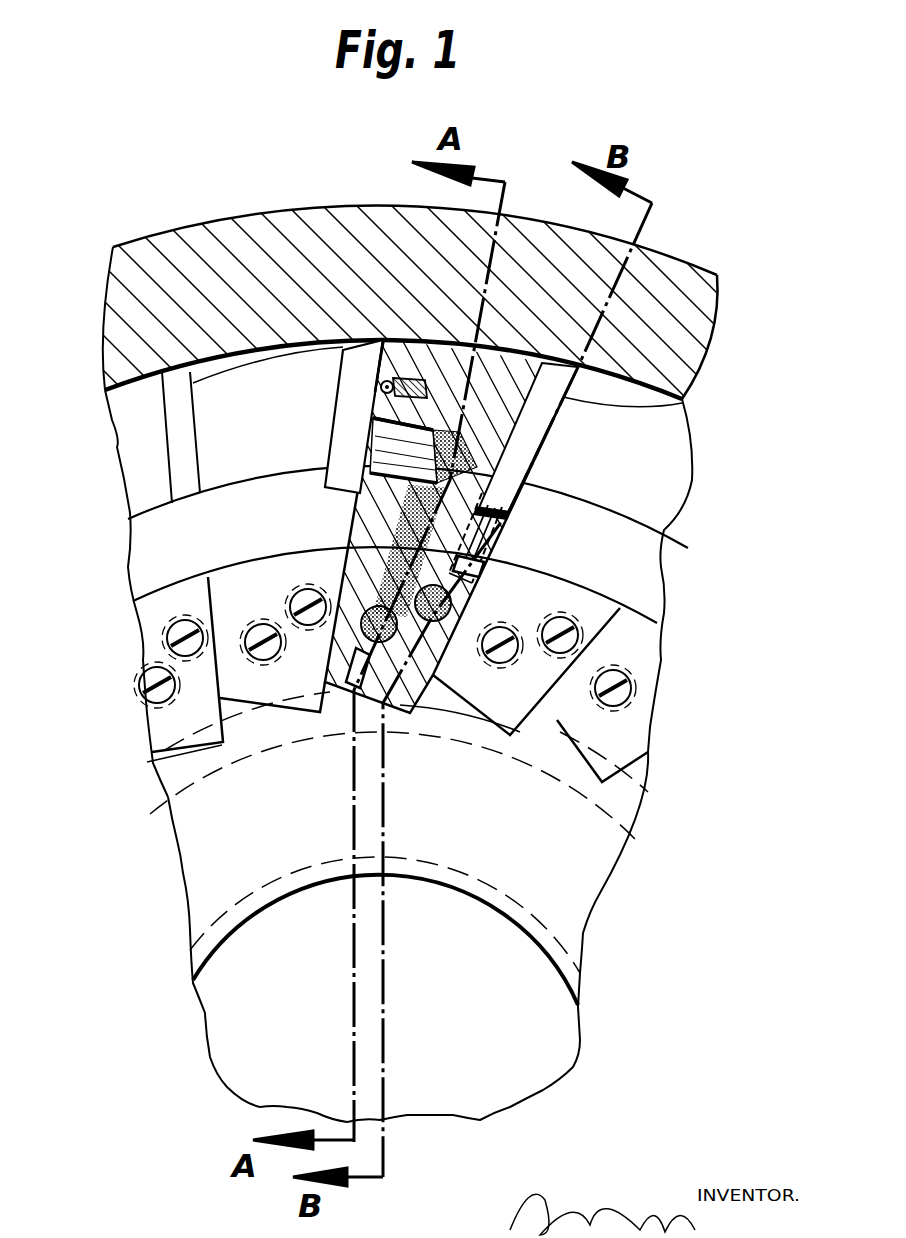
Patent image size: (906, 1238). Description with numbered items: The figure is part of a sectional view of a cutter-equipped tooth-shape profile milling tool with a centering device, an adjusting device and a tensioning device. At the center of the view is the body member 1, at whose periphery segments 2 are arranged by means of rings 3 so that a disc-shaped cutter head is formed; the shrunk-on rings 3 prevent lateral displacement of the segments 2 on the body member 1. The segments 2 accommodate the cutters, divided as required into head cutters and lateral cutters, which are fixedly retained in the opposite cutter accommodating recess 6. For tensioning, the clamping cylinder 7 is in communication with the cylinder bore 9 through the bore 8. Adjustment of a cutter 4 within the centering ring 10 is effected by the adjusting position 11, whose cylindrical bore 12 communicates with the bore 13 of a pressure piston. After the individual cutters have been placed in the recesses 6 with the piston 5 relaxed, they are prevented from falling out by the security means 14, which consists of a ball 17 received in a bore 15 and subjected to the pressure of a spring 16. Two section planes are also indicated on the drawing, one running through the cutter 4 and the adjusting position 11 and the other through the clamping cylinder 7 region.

The body member 1 is at (577, 922).
The segments 2 is at (530, 418).
The rings 3 is at (630, 600).
The cutter 4 is at (530, 449).
The piston 5 is at (364, 492).
The cutter accommodating recess 6 is at (330, 443).
The clamping cylinder 7 is at (408, 484).
The bore 8 is at (398, 568).
The cylinder bore 9 is at (337, 648).
The centering ring 10 is at (146, 252).
The adjusting position 11 is at (474, 576).
The cylindrical bore 12 is at (507, 537).
The bore 13 is at (437, 622).
The security means 14 is at (380, 386).
The bore 15 is at (378, 416).
The spring 16 is at (403, 377).
The ball 17 is at (377, 393).